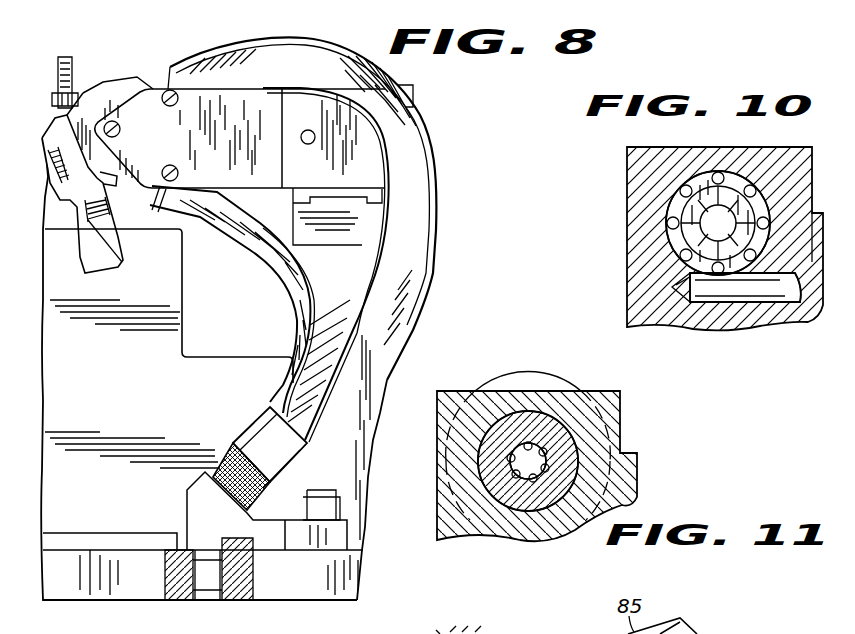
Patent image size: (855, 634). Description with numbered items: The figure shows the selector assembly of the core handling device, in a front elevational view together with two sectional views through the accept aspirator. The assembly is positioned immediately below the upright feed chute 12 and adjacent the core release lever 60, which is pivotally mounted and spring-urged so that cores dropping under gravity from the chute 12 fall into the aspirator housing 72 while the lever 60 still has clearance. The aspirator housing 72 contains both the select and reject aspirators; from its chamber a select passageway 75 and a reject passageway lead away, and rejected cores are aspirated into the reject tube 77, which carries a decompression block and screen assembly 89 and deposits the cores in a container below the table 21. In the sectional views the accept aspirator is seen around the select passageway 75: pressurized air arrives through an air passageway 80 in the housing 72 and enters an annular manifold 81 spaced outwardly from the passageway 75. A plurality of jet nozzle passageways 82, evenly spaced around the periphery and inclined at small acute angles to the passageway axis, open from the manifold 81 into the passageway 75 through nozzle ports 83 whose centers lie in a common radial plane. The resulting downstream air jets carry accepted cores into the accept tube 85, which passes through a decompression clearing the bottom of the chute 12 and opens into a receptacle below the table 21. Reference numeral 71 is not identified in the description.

In FIG. 8, the feed chute 12 is at (58, 80).
In FIG. 8, the table 21 is at (120, 585).
In FIG. 8, the core release lever 60 is at (50, 148).
In FIG. 11, the shaft 71 is at (553, 418).
In FIG. 8, the aspirator housing 72 is at (137, 96).
In FIG. 10, the aspirator housing 72 is at (647, 268).
In FIG. 11, the aspirator housing 72 is at (455, 392).
In FIG. 10, the select passageway 75 is at (724, 235).
In FIG. 11, the select passageway 75 is at (537, 458).
In FIG. 8, the reject tube 77 is at (275, 257).
In FIG. 10, the reject tube 77 is at (700, 172).
In FIG. 10, the air passageway 80 is at (808, 282).
In FIG. 10, the annular manifold 81 is at (752, 172).
In FIG. 10, the jet nozzle passageways 82 is at (683, 254).
In FIG. 11, the nozzle ports 83 is at (522, 486).
In FIG. 8, the accept tube 85 is at (282, 45).
In FIG. 11, the accept tube 85 is at (532, 380).
In FIG. 8, the decompression block and screen assembly 89 is at (262, 497).